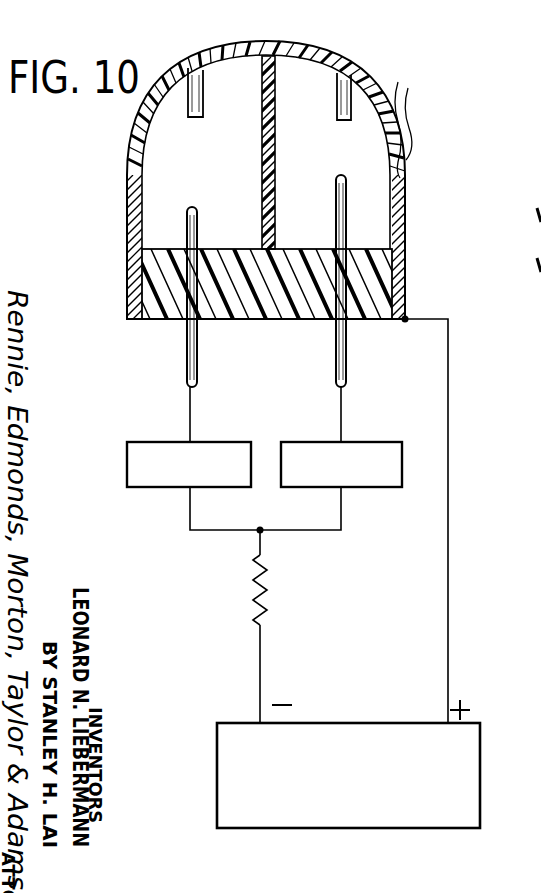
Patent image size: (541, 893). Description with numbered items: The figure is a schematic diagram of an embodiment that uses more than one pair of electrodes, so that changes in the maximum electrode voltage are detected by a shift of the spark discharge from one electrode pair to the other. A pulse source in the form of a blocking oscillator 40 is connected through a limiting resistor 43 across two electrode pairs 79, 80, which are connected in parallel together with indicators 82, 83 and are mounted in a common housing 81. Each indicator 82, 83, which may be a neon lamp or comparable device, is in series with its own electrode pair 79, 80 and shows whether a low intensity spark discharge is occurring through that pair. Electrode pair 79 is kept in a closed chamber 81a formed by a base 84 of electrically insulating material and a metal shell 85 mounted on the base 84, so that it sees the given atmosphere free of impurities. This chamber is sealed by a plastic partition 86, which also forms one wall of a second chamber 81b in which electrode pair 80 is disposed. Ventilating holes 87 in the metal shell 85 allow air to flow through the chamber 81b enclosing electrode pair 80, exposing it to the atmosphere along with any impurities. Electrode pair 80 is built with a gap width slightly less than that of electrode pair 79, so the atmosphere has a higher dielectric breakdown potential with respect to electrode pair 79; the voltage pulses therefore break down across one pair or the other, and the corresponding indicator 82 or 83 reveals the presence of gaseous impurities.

The blocking oscillator 40 is at (476, 799).
The limiting resistor 43 is at (268, 592).
The electrode pair 79 is at (207, 110).
The electrode pair 80 is at (354, 108).
The common housing 81 is at (300, 48).
The closed chamber 81a is at (170, 175).
The second chamber 81b is at (372, 206).
The indicator 82 is at (216, 446).
The indicator 83 is at (371, 446).
The base 84 is at (252, 310).
The metal shell 85 is at (400, 298).
The plastic partition 86 is at (282, 177).
The ventilating holes 87 is at (356, 91).